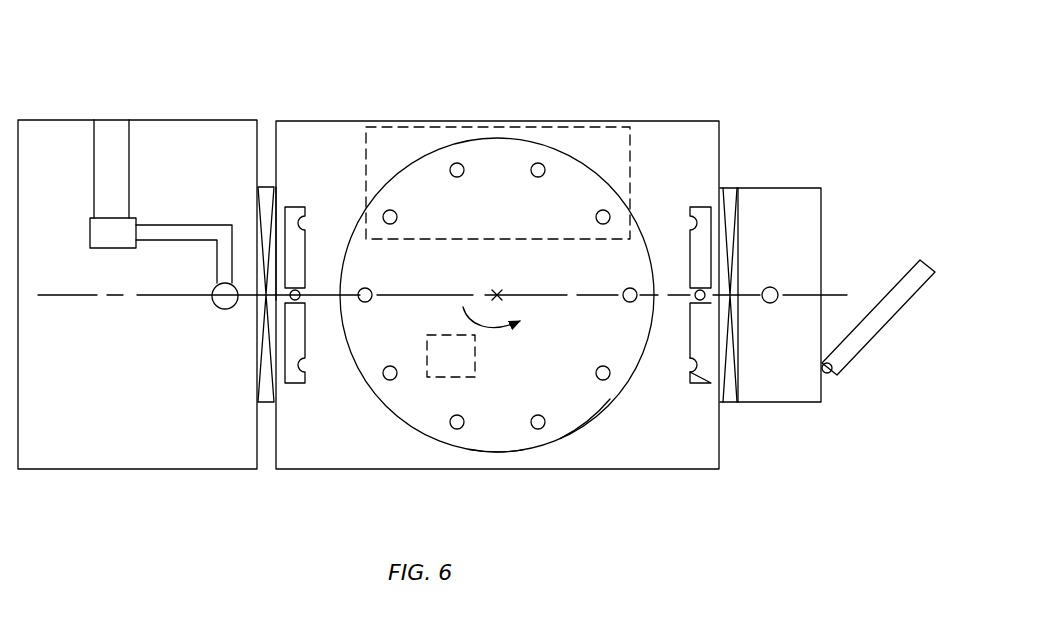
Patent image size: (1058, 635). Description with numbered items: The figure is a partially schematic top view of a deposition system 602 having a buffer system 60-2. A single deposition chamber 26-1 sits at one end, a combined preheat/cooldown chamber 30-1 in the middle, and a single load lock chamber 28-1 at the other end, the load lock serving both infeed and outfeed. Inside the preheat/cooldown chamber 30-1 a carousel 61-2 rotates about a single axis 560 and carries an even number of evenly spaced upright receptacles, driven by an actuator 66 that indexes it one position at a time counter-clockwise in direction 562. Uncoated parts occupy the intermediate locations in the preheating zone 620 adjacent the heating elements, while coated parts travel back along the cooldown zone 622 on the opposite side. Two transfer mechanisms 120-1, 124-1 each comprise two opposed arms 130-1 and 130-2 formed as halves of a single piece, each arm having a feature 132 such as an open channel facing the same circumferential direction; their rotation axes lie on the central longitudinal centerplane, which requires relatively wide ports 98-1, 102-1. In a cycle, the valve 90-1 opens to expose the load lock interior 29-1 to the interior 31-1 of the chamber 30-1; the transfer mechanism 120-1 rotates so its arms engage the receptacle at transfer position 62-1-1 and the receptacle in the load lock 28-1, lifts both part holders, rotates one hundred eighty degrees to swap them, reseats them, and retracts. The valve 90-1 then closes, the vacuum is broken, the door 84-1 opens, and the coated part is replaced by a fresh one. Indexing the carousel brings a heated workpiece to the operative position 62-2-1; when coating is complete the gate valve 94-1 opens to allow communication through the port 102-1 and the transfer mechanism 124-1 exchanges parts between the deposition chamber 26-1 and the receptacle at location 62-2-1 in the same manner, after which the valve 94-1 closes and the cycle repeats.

The system 602 is at (828, 97).
The deposition chamber 26-1 is at (192, 110).
The preheat/cooldown chamber 30-1 is at (668, 112).
The load lock chamber 28-1 is at (781, 211).
The gate valve 94-1 is at (267, 188).
The port 102-1 is at (275, 206).
The transfer mechanism 124-1 is at (298, 398).
The preheating zone 620 is at (493, 155).
The cooldown zone 622 is at (497, 440).
The carousel 61-2 is at (582, 415).
The buffer system 60-2 is at (553, 152).
The transfer position 62-1-1 is at (624, 289).
The operative position 62-2-1 is at (374, 285).
The axis 560 is at (517, 297).
The direction 562 is at (495, 332).
The actuator 66 is at (440, 367).
The interior 31-1 is at (700, 157).
The arm 130-1 is at (704, 207).
The arm 130-2 is at (697, 368).
The feature 132 is at (713, 367).
The transfer mechanism 120-1 is at (716, 282).
The port 98-1 is at (731, 224).
The valve 90-1 is at (728, 400).
The interior 29-1 is at (805, 265).
The door 84-1 is at (867, 330).